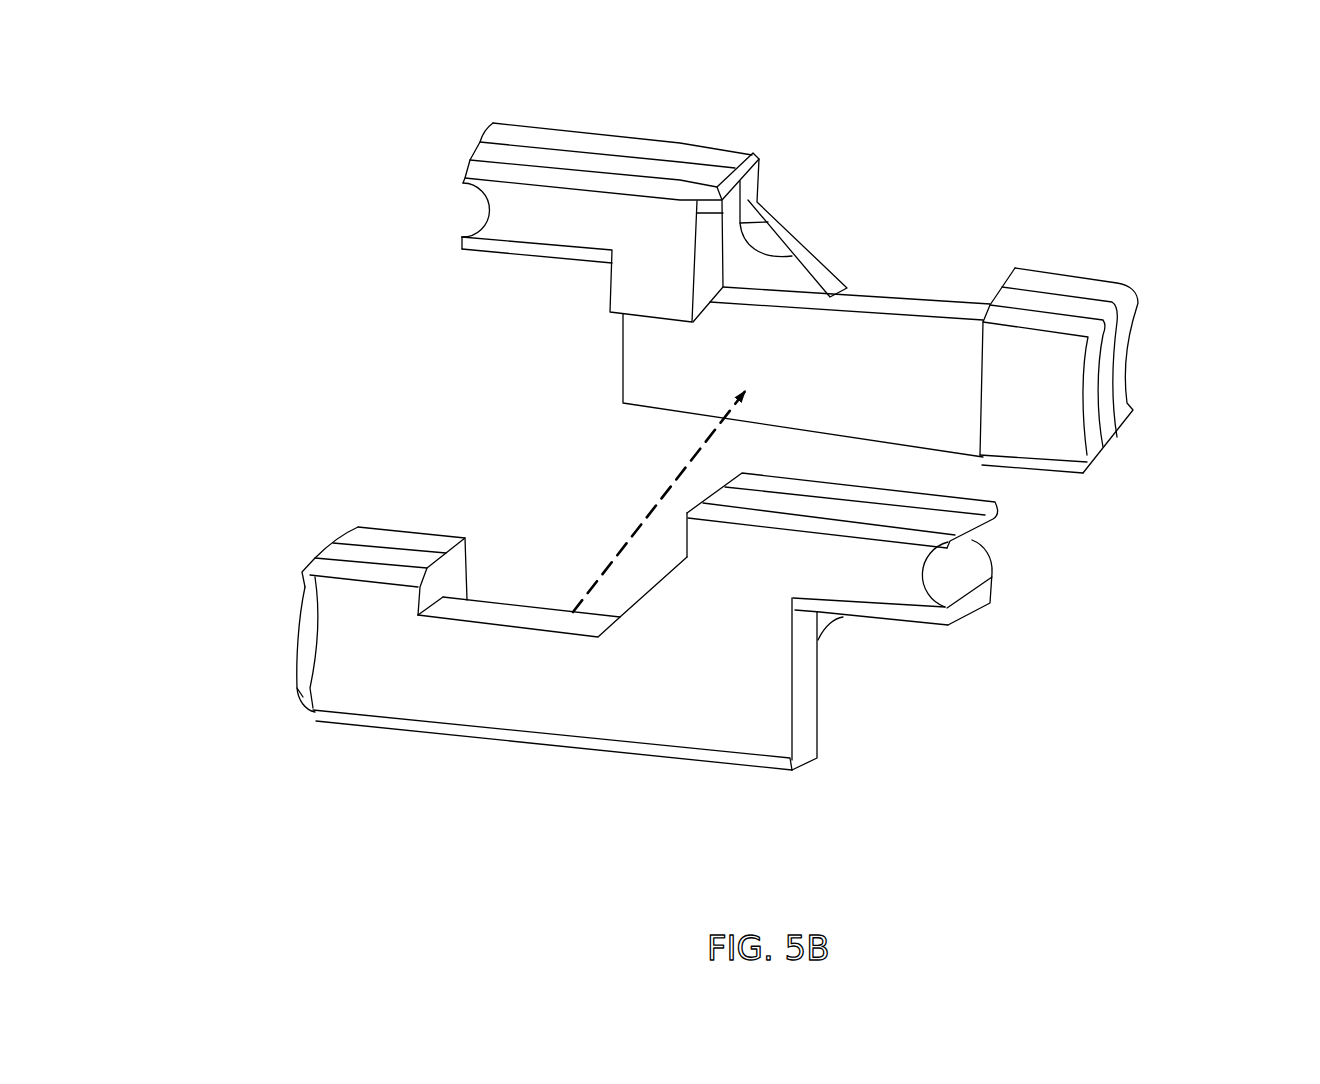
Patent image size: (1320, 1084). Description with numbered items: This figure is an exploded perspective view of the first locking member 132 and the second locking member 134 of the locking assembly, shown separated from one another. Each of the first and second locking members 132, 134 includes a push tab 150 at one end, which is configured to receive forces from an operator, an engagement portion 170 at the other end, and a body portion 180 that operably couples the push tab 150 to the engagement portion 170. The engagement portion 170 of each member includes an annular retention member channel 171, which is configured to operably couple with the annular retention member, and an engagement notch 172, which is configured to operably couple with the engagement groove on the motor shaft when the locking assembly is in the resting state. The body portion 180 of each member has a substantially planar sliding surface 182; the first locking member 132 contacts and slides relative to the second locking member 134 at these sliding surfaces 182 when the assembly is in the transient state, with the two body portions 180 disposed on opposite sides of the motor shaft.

The first locking member 132 is at (385, 697).
The second locking member 134 is at (1067, 285).
The push tab 150 is at (702, 428).
The engagement portion 170 is at (606, 109).
The annular retention member channel 171 is at (472, 218).
The engagement notch 172 is at (727, 186).
The body portion 180 is at (646, 491).
The sliding surface 182 is at (837, 373).